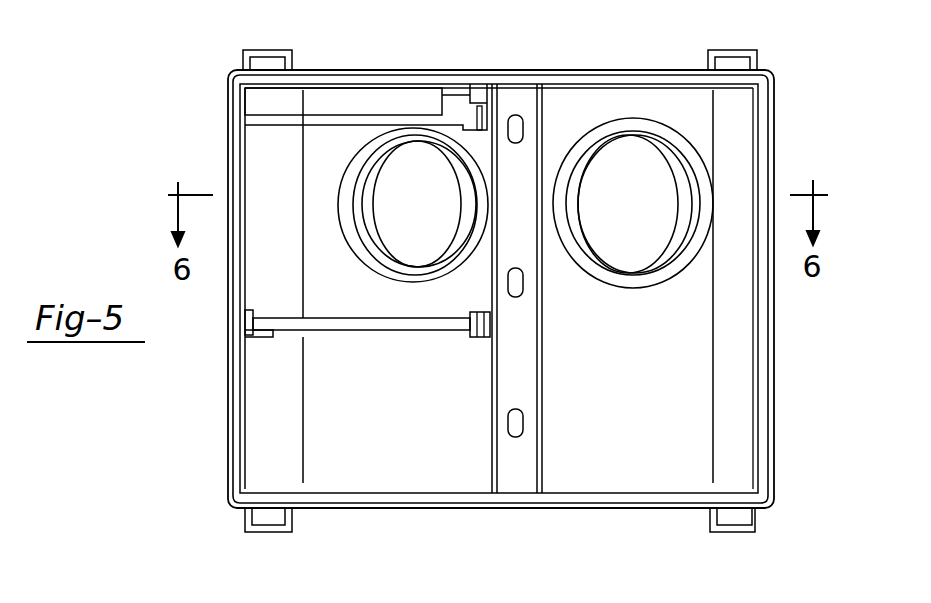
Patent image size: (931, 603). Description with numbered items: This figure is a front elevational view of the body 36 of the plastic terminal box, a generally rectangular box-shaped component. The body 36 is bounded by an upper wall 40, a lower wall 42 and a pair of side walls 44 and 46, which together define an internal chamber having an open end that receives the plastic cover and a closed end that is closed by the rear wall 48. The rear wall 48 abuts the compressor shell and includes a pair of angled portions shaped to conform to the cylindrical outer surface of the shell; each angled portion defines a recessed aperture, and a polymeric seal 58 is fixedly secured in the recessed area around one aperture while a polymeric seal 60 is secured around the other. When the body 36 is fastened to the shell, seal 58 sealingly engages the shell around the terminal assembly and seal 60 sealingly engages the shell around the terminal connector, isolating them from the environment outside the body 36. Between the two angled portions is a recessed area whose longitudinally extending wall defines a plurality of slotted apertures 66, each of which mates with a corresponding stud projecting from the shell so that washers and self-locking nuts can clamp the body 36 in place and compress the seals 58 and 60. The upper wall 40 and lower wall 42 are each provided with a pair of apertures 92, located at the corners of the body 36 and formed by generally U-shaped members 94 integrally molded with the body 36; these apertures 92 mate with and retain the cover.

The body 36 is at (553, 36).
The upper wall 40 is at (400, 72).
The lower wall 42 is at (420, 510).
The side wall 44 is at (230, 393).
The side wall 46 is at (768, 336).
The rear wall 48 is at (395, 427).
The polymeric seal 58 is at (682, 217).
The polymeric seal 60 is at (372, 198).
The slotted aperture 66 is at (519, 282).
The aperture 92 is at (737, 65).
The U-shaped member 94 is at (733, 51).